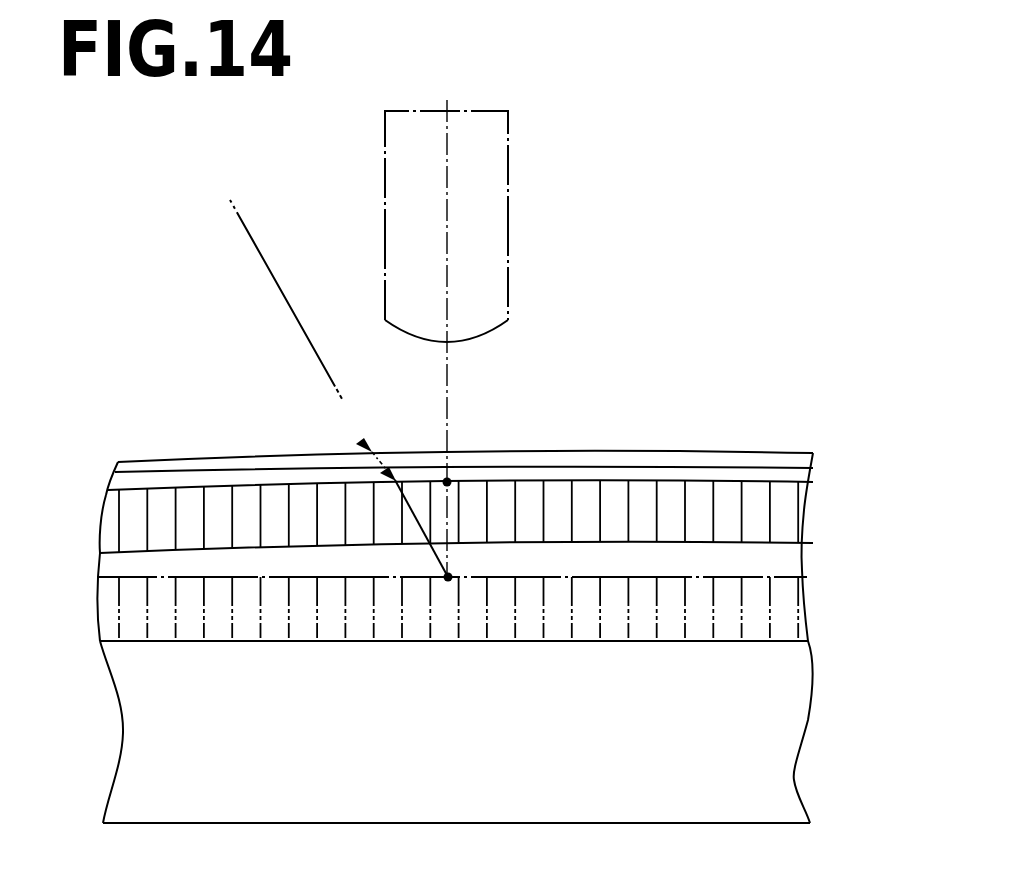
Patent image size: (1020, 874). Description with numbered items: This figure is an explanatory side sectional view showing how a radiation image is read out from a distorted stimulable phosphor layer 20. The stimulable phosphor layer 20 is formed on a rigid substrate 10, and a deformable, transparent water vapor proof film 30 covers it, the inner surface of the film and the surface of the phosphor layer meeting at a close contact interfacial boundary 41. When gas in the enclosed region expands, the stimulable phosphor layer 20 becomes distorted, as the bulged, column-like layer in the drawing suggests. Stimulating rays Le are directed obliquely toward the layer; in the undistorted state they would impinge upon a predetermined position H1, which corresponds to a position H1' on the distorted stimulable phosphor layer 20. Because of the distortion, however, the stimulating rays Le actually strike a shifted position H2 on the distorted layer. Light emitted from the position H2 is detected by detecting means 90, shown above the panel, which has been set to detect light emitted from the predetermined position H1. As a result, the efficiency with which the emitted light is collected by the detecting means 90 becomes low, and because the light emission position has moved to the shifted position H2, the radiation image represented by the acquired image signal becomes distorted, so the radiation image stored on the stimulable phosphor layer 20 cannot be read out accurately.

The substrate 10 is at (782, 730).
The stimulable phosphor layer 20 is at (782, 528).
The water vapor proof film 30 is at (765, 458).
The close contact interfacial boundary 41 is at (797, 475).
The detecting means 90 is at (495, 211).
The stimulating rays Le is at (290, 305).
The predetermined position H1 is at (497, 649).
The position on the distorted stimulable phosphor layer H1' is at (510, 446).
The shifted position H2 is at (393, 482).